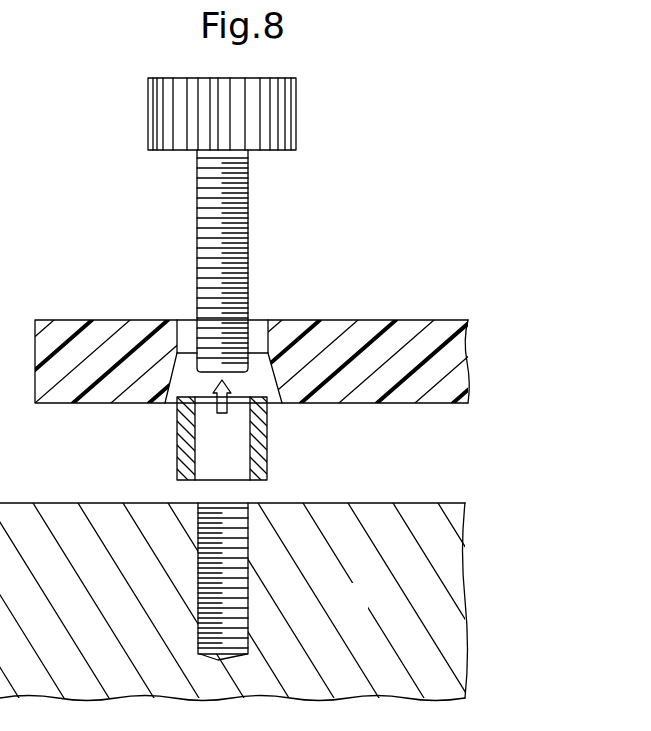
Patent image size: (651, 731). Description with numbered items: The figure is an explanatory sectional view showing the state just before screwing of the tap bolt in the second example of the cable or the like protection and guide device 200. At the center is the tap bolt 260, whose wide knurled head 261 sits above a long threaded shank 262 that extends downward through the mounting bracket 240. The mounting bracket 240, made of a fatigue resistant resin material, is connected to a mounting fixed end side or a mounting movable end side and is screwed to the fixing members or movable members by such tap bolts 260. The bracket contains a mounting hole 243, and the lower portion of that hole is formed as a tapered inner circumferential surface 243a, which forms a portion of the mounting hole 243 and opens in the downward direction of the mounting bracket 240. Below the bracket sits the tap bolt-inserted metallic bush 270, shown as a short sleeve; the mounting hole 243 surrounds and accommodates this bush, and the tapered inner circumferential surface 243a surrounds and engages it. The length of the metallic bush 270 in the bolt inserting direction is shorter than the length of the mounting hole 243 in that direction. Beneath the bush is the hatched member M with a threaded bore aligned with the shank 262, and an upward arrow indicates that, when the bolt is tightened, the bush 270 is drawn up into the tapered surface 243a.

The cable or the like protection and guide device 200 is at (300, 389).
The tap bolt 260 is at (259, 225).
The screw head 261 is at (147, 123).
The threaded shaft 262 is at (197, 213).
The mounting bracket 240 is at (300, 369).
The mounting hole 243 is at (183, 318).
The tapered inner circumferential surface 243a is at (171, 403).
The metallic bush 270 is at (390, 457).
The mounting member M is at (362, 610).